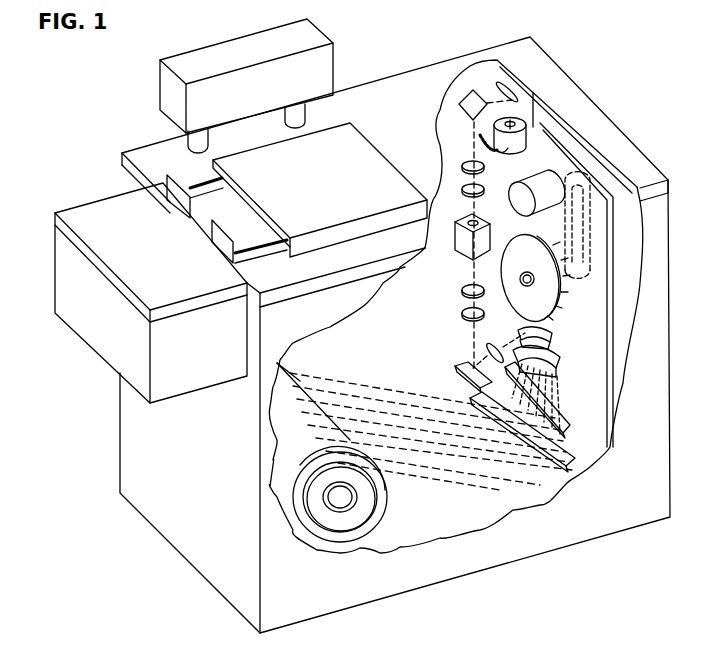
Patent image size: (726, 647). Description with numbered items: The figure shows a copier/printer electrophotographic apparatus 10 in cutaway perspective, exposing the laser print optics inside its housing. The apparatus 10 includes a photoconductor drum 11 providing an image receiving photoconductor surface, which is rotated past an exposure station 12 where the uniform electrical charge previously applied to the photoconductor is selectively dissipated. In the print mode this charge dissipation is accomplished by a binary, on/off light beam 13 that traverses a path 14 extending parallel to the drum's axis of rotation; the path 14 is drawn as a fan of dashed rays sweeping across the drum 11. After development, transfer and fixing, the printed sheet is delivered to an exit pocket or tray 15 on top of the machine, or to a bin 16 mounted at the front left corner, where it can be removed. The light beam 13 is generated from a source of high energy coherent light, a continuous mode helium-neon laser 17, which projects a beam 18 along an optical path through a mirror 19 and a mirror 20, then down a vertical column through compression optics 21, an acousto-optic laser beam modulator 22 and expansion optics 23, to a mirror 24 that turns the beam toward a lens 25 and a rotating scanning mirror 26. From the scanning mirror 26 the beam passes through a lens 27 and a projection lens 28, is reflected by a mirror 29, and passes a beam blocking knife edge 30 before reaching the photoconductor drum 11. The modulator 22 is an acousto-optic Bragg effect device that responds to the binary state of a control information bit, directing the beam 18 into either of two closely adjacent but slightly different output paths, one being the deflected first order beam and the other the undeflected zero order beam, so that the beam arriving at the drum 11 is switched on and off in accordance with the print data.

The copier/printer electrophotographic apparatus 10 is at (113, 441).
The photoconductor drum 11 is at (369, 522).
The exposure station 12 is at (389, 486).
The light beam 13 is at (463, 476).
The path 14 is at (421, 434).
The exit pocket or tray 15 is at (240, 218).
The bin 16 is at (104, 213).
The helium-neon laser 17 is at (508, 143).
The beam 18 is at (512, 116).
The mirror 19 is at (512, 99).
The mirror 20 is at (462, 101).
The compression optics 21 is at (461, 177).
The acousto-optic laser beam modulator 22 is at (465, 255).
The expansion optics 23 is at (462, 305).
The mirror 24 is at (468, 368).
The lens 25 is at (493, 345).
The rotating scanning mirror 26 is at (545, 298).
The lens 27 is at (552, 338).
The projection lens 28 is at (556, 367).
The mirror 29 is at (573, 461).
The beam blocking knife edge 30 is at (560, 415).